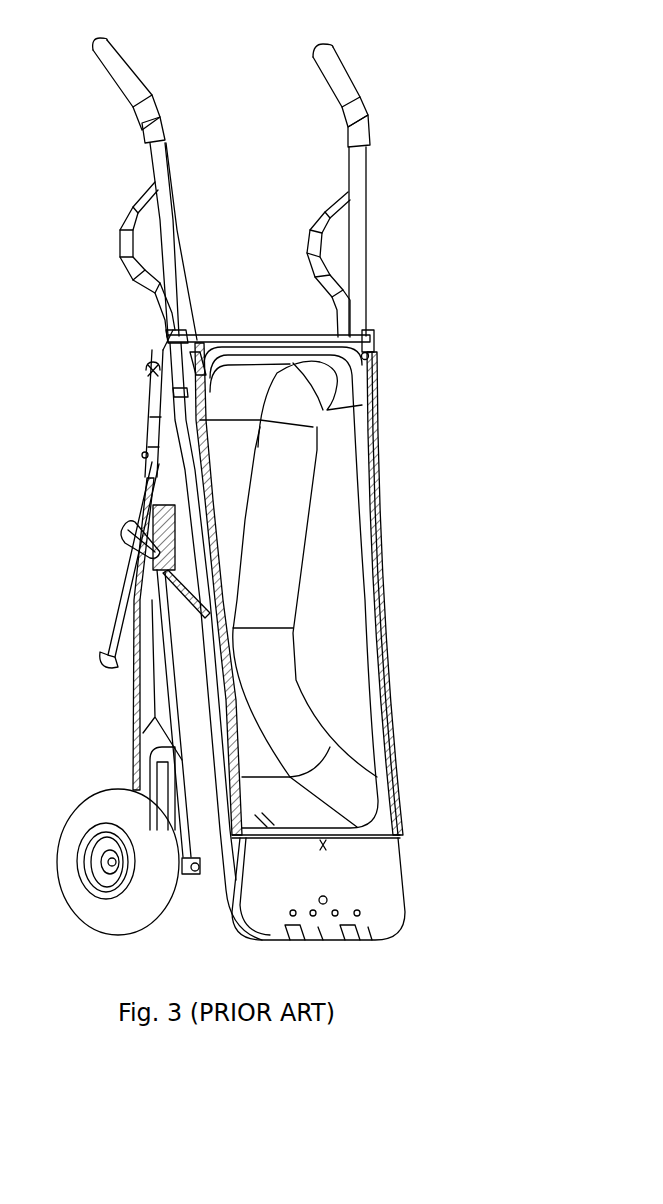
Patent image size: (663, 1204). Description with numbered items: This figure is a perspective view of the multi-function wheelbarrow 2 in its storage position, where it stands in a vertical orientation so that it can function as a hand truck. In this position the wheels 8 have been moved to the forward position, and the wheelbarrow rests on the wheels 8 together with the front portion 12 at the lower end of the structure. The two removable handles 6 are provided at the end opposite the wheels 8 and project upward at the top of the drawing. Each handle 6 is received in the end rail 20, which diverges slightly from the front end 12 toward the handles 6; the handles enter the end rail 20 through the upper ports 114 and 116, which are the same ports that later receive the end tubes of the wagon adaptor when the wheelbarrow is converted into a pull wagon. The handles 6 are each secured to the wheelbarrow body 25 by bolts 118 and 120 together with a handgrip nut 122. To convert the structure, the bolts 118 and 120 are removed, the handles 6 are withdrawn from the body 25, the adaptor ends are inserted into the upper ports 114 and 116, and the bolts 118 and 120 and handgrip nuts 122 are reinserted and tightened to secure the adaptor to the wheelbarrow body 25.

The wheelbarrow 2 is at (399, 575).
The handles 6 is at (181, 234).
The wheels 8 is at (135, 912).
The front portion 12 is at (369, 951).
The end rail 20 is at (390, 341).
The wheelbarrow body 25 is at (387, 516).
The upper port 114 is at (369, 337).
The upper port 116 is at (192, 327).
The bolt 118 is at (369, 358).
The bolt 120 is at (205, 340).
The handgrip nut 122 is at (148, 370).